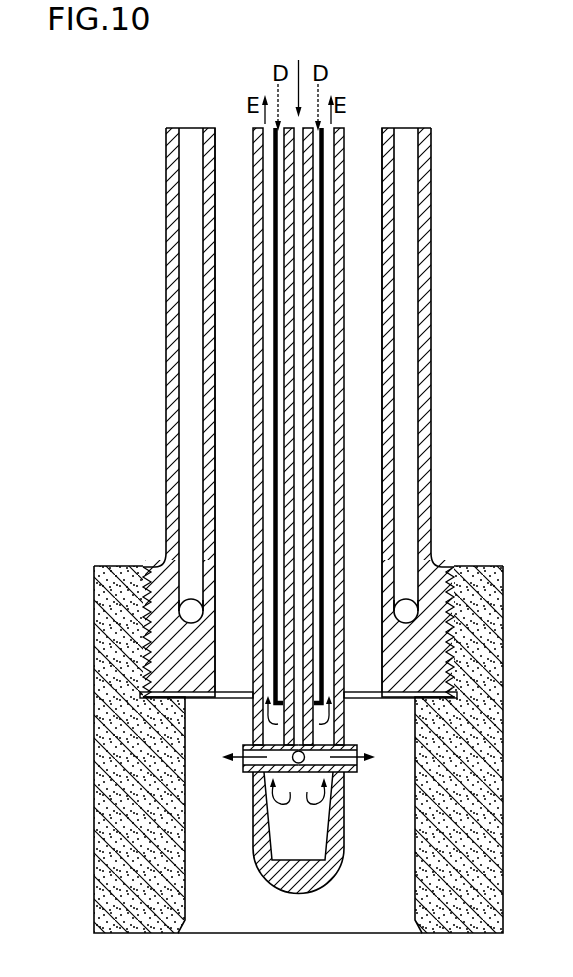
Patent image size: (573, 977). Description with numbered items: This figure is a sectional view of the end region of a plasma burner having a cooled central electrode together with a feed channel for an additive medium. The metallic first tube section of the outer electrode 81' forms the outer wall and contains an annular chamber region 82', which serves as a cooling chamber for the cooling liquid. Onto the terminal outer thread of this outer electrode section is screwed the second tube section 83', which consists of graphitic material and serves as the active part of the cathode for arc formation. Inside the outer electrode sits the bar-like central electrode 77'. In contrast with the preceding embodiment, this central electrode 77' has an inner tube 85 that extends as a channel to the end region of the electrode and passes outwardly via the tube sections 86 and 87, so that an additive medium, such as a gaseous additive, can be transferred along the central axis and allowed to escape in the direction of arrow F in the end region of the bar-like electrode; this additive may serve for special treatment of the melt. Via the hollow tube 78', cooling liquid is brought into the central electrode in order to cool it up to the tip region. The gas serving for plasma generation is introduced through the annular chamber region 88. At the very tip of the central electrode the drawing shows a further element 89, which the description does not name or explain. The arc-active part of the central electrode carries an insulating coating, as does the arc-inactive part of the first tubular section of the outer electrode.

The bar-like central electrode 77' is at (362, 436).
The hollow tube 78' is at (328, 415).
The first tube section of the outer electrode 81' is at (287, 412).
The annular chamber region 82' is at (269, 431).
The second tube section 83' is at (323, 749).
The inner tube 85 is at (311, 172).
The tube section 86 is at (247, 745).
The tube section 87 is at (350, 745).
The annular chamber region 88 is at (228, 152).
The cup-shaped receptacle 89 is at (315, 884).